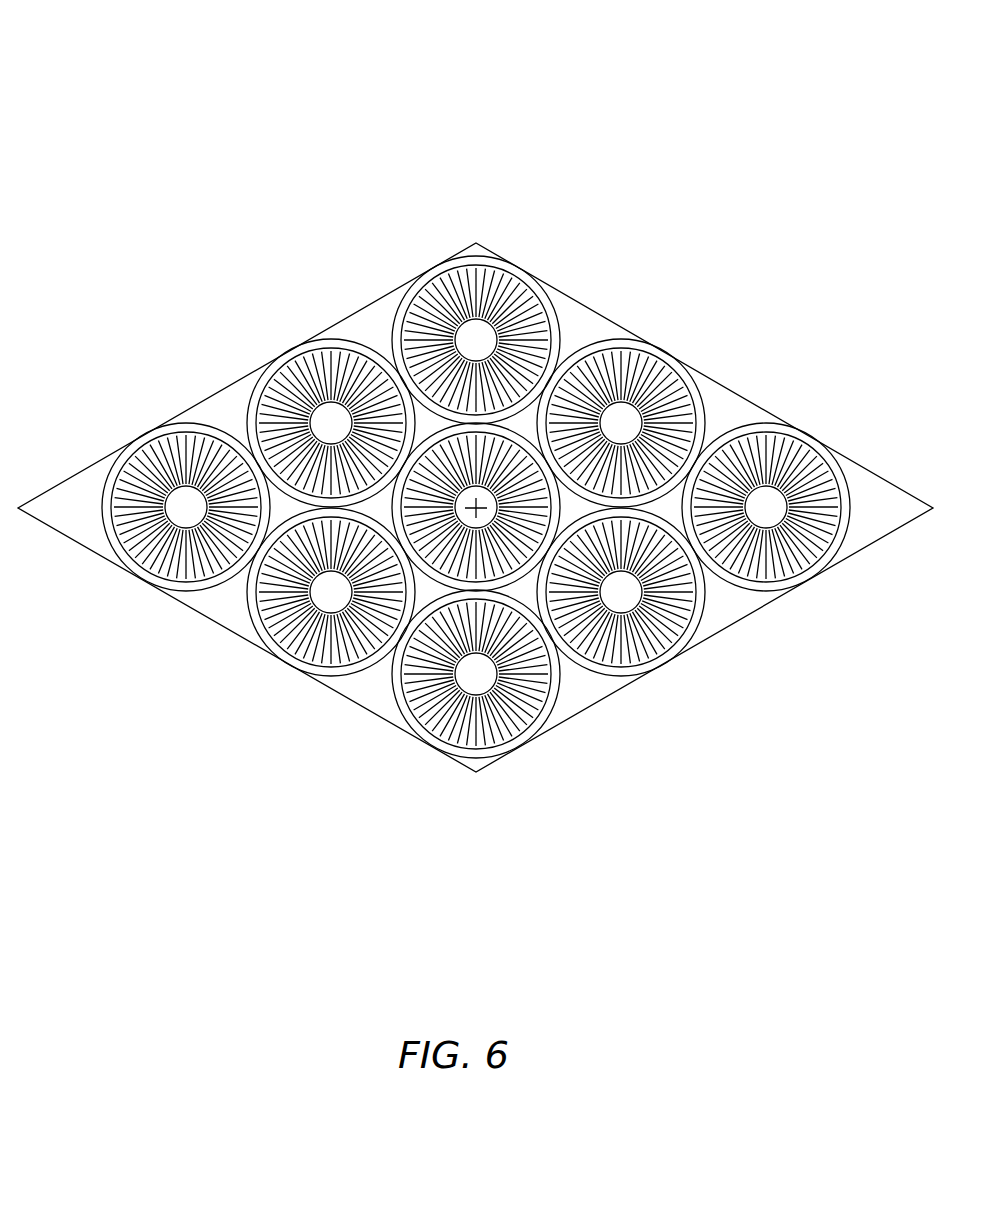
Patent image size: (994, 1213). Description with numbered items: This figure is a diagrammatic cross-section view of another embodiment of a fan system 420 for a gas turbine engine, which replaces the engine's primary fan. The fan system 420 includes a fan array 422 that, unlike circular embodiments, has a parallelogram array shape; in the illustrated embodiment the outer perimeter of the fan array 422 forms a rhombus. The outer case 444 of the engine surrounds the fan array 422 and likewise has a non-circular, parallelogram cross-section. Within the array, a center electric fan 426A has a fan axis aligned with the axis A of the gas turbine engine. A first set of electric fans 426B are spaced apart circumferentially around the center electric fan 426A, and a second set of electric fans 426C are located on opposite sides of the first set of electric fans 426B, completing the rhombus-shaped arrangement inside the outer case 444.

The fan system 420 is at (207, 90).
The fan array 422 is at (184, 195).
The outer case 444 is at (195, 408).
The center electric fan 426A is at (430, 427).
The first set of electric fans 426B is at (280, 355).
The second set of electric fans 426C is at (808, 435).
The axis A is at (476, 508).